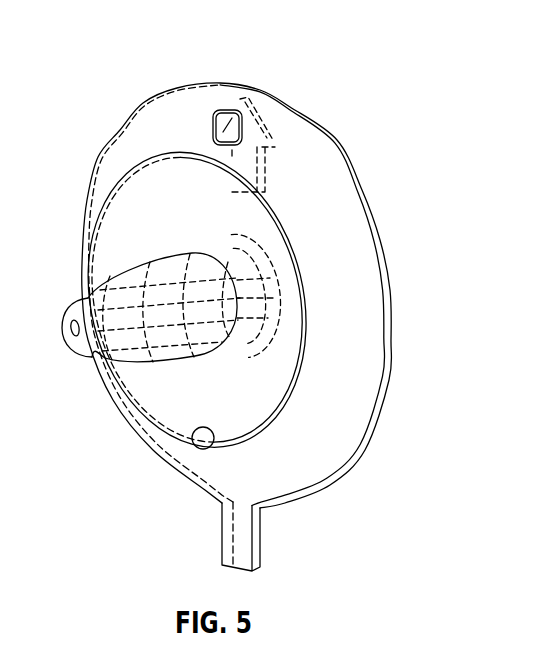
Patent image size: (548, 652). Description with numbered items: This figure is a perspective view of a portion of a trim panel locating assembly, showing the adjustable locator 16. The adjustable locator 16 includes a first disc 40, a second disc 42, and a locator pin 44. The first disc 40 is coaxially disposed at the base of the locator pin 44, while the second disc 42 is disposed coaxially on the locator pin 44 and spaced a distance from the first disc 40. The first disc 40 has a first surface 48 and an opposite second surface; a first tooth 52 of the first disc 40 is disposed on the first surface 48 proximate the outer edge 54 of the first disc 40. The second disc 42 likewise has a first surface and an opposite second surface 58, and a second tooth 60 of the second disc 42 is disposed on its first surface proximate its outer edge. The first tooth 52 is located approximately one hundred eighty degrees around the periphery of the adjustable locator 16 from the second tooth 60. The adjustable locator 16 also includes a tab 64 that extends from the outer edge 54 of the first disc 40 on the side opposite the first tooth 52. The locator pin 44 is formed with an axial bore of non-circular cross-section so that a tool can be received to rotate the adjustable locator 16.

The adjustable locator 16 is at (231, 311).
The first disc 40 is at (336, 139).
The second disc 42 is at (191, 299).
The locator pin 44 is at (86, 301).
The first surface 48 is at (260, 295).
The first tooth 52 is at (243, 134).
The outer edge 54 is at (373, 208).
The second surface 58 is at (176, 410).
The second tooth 60 is at (203, 449).
The tab 64 is at (262, 538).